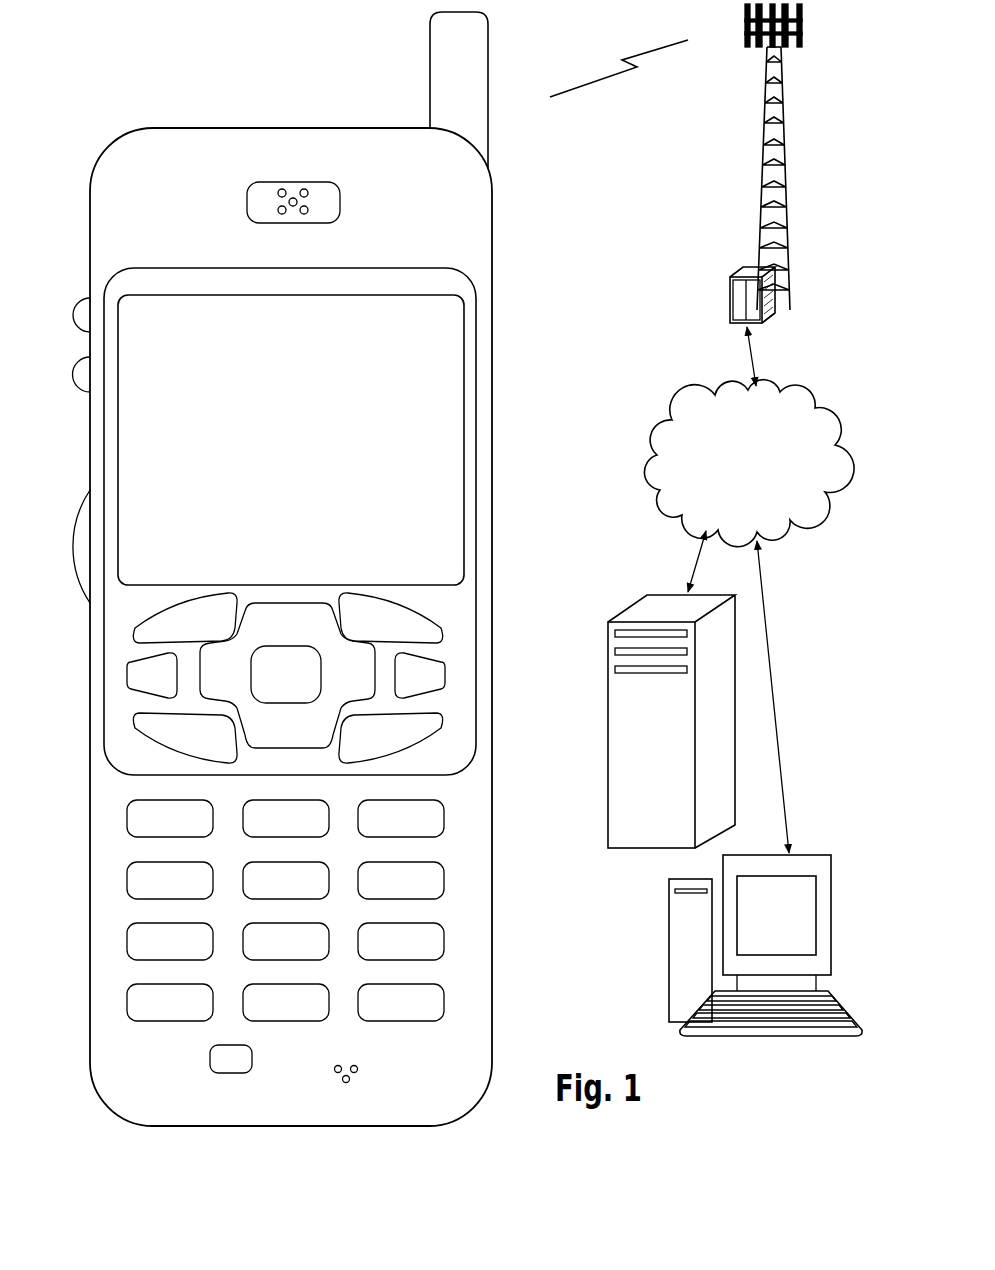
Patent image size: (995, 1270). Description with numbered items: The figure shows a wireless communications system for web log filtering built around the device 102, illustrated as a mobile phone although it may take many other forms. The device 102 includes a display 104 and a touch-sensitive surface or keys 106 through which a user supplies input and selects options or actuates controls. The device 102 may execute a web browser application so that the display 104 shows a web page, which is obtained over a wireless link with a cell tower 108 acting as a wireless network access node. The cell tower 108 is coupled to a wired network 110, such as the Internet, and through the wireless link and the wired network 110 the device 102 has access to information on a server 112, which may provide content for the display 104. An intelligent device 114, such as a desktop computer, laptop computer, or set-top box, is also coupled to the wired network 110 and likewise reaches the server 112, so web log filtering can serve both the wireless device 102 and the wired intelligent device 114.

The device 102 is at (137, 1126).
The display 104 is at (466, 310).
The keys 106 is at (499, 1028).
The cell tower 108 is at (758, 180).
The wired network 110 is at (668, 507).
The server 112 is at (655, 848).
The intelligent device 114 is at (748, 1032).